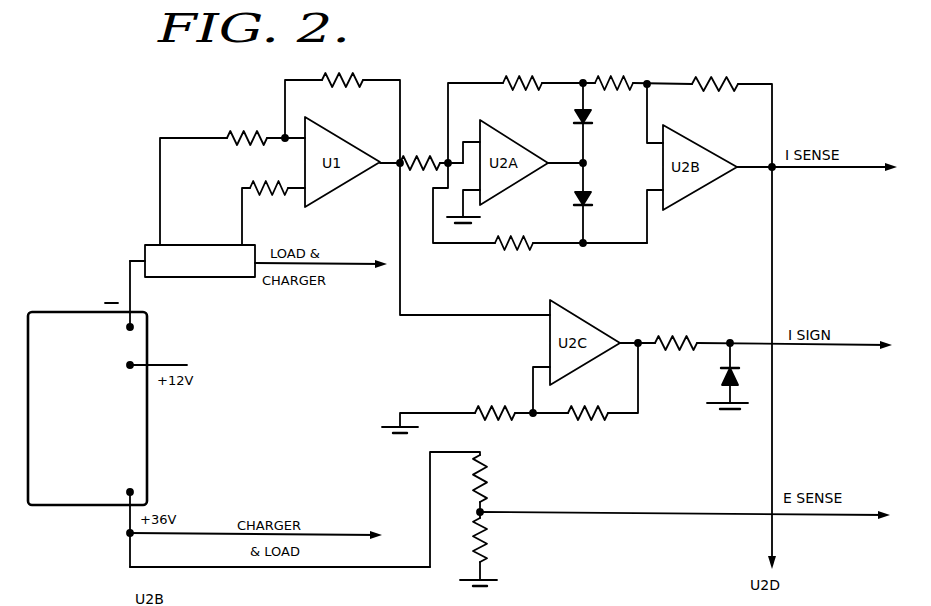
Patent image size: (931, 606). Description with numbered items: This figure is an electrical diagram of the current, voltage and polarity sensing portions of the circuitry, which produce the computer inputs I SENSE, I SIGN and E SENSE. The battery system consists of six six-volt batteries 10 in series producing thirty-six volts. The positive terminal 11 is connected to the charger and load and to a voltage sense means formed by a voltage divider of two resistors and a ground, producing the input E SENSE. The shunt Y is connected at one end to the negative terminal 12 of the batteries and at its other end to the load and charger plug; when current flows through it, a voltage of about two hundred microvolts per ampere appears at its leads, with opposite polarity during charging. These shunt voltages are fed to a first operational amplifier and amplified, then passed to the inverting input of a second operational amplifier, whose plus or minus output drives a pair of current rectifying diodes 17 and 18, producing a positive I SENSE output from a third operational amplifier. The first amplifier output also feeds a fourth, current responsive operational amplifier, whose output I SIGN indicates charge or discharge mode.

The batteries 10 is at (50, 315).
The positive terminal 11 is at (136, 491).
The negative terminal 12 is at (135, 326).
The current rectifying diode 17 is at (596, 119).
The current rectifying diode 18 is at (594, 201).
The shunt Y is at (143, 242).